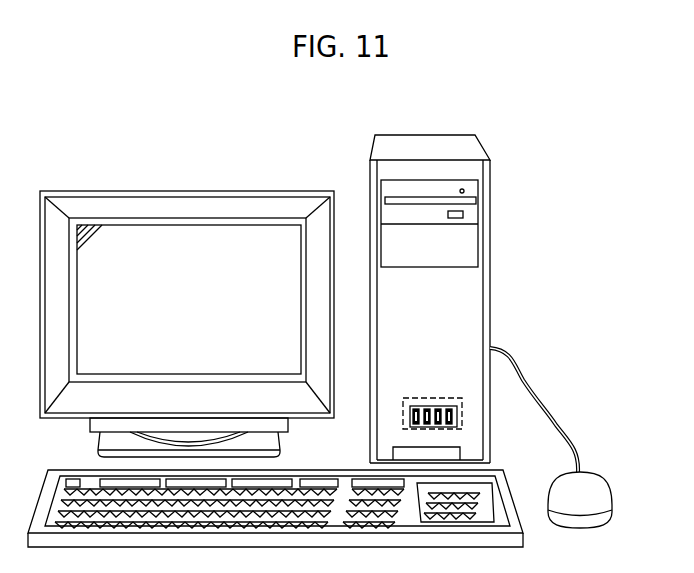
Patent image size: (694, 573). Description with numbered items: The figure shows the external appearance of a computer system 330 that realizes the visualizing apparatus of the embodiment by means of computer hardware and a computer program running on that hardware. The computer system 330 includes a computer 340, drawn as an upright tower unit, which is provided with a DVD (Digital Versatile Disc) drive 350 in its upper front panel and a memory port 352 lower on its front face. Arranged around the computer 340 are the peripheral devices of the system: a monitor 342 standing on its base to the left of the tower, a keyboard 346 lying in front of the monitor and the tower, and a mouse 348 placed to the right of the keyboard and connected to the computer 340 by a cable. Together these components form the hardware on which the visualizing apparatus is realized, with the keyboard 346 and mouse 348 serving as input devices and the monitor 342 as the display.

The computer system 330 is at (546, 104).
The computer 340 is at (484, 138).
The monitor 342 is at (315, 190).
The keyboard 346 is at (515, 487).
The mouse 348 is at (612, 477).
The DVD drive 350 is at (492, 200).
The memory port 352 is at (467, 413).